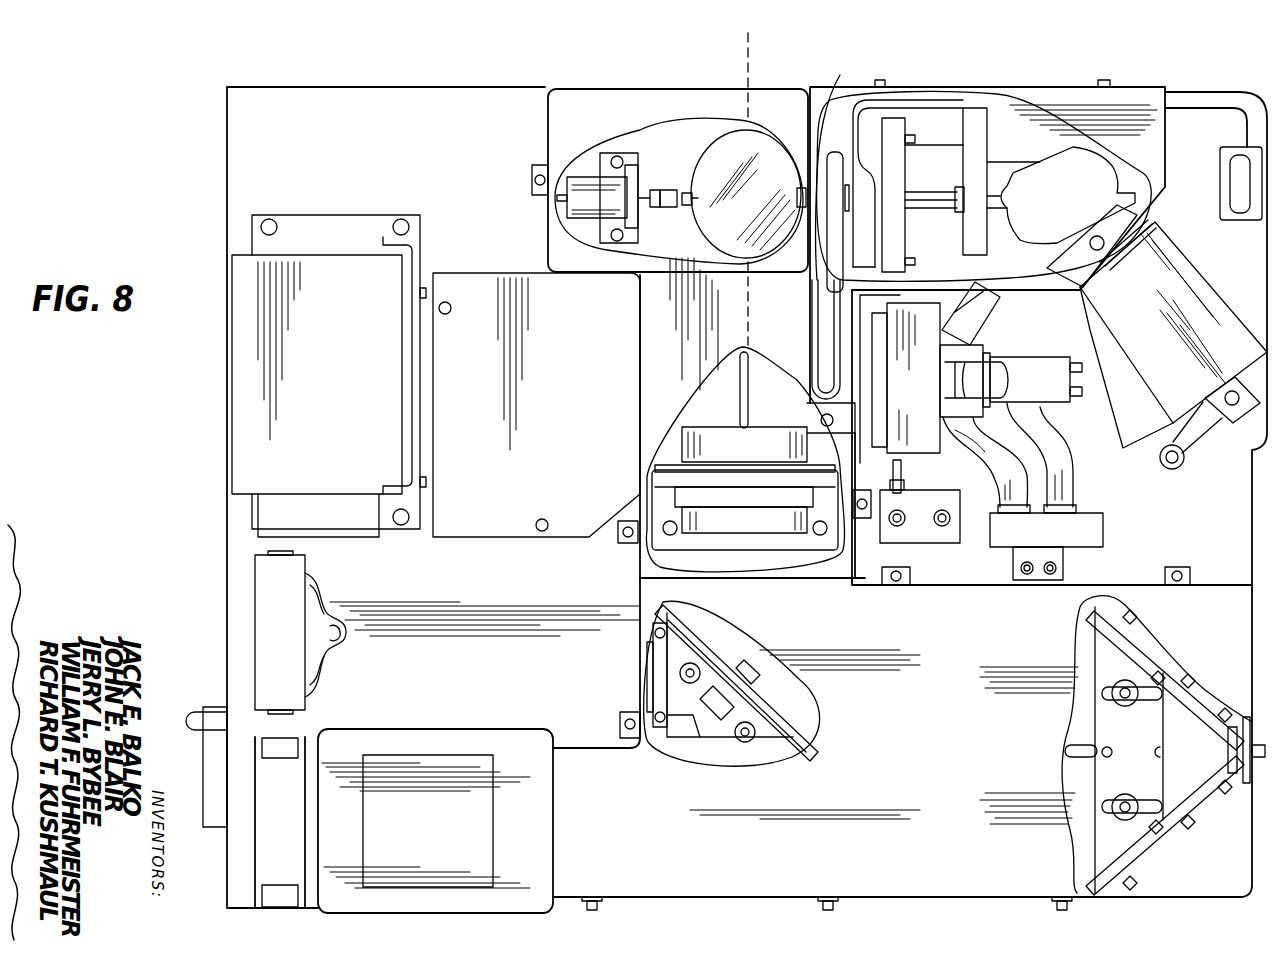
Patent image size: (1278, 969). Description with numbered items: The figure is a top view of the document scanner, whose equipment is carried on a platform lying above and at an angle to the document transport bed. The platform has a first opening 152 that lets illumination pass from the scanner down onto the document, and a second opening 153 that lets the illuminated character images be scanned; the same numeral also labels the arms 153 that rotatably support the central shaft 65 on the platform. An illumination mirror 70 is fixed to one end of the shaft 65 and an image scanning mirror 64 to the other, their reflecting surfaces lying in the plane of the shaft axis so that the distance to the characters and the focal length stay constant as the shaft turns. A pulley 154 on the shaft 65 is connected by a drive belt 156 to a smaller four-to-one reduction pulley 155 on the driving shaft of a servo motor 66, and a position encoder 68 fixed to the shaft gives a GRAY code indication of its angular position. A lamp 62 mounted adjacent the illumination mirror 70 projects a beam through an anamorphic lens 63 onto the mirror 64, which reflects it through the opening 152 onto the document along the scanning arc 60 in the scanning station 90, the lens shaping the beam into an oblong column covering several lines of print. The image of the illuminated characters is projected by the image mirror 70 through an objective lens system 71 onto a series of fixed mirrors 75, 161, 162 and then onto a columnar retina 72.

The scanning arc 60 is at (753, 63).
The lamp 62 is at (1166, 309).
The anamorphic lens 63 is at (1140, 228).
The image scanning mirror 64 is at (1069, 207).
The central shaft 65 is at (668, 190).
The servo motor 66 is at (920, 386).
The position encoder 68 is at (880, 242).
The illumination mirror 70 is at (757, 209).
The objective lens system 71 is at (758, 428).
The columnar retina 72 is at (438, 729).
The fixed mirror 75 is at (790, 722).
The scanning station 90 is at (719, 88).
The first opening 152 is at (1020, 160).
The second opening 153 is at (640, 228).
The pulley 154 is at (835, 166).
The reduction pulley 155 is at (823, 372).
The drive belt 156 is at (833, 283).
The fixed mirror 161 is at (1115, 638).
The fixed mirror 162 is at (1113, 863).